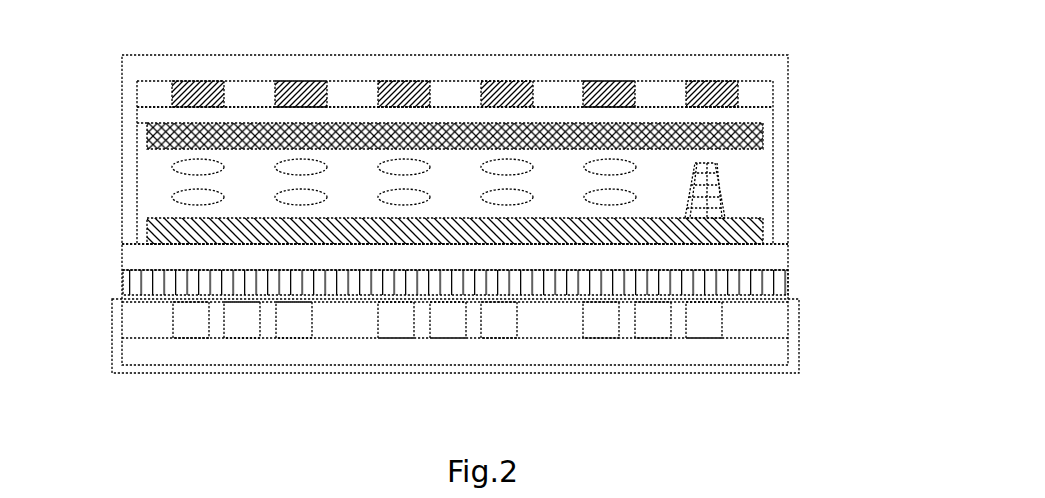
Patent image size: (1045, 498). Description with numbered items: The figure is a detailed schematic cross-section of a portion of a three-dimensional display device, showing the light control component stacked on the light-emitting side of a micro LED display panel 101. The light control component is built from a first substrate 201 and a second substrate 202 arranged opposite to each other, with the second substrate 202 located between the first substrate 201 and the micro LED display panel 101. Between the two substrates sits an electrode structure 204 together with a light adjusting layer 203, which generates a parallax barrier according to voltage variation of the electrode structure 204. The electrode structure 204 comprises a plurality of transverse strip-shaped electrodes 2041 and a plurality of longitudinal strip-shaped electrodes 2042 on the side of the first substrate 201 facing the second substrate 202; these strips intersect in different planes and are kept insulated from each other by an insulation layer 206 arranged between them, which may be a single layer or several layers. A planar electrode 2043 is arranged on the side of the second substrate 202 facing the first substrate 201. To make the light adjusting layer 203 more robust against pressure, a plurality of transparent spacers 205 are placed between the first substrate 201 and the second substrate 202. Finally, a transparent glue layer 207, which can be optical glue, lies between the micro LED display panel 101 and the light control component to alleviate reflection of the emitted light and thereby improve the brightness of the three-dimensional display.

The micro LED display panel 101 is at (799, 334).
The first substrate 201 is at (122, 67).
The second substrate 202 is at (122, 254).
The light adjusting layer 203 is at (161, 184).
The electrode structure 204 is at (896, 82).
The transverse strip-shaped electrodes 2041 is at (738, 93).
The longitudinal strip-shaped electrodes 2042 is at (763, 136).
The planar electrode 2043 is at (763, 229).
The transparent spacers 205 is at (706, 163).
The insulation layer 206 is at (137, 116).
The transparent glue layer 207 is at (122, 282).